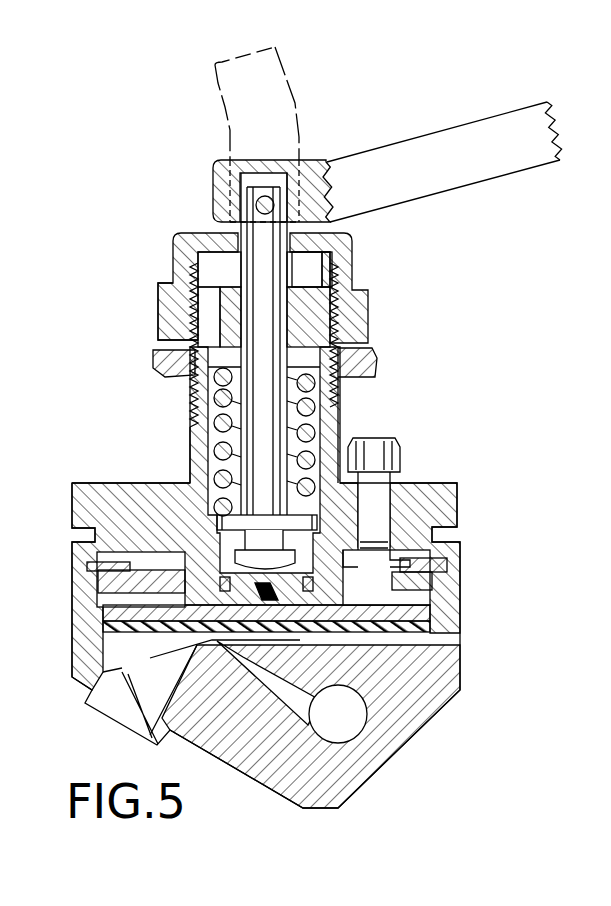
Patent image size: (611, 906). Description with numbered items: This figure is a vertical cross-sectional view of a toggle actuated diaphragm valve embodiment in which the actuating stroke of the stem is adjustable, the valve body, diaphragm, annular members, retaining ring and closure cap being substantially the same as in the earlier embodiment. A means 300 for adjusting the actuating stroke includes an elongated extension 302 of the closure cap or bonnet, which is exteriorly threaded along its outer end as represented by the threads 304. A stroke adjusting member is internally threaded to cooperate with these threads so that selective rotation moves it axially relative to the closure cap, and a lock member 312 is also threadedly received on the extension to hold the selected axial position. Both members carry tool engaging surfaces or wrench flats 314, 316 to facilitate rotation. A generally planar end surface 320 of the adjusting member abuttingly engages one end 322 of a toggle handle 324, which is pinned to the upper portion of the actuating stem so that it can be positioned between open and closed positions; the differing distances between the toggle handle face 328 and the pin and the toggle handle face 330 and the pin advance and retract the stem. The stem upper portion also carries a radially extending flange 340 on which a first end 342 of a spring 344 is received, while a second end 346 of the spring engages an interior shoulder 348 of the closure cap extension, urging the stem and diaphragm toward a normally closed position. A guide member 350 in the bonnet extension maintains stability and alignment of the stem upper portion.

The means for adjusting the actuating stroke 300 is at (413, 341).
The elongated extension 302 is at (192, 413).
The external threads 304 is at (338, 393).
The lock member 312 is at (368, 357).
The wrench flats 314 is at (175, 258).
The wrench flats 316 is at (157, 356).
The planar end surface 320 is at (213, 232).
The end of toggle handle 322 is at (218, 163).
The toggle handle 324 is at (275, 85).
The toggle handle face 328 is at (300, 130).
The toggle handle face 330 is at (217, 197).
The radially extending flange 340 is at (175, 482).
The first end of spring 342 is at (193, 441).
The spring 344 is at (320, 433).
The second end of spring 346 is at (335, 343).
The interior shoulder 348 is at (193, 383).
The guide member 350 is at (335, 265).